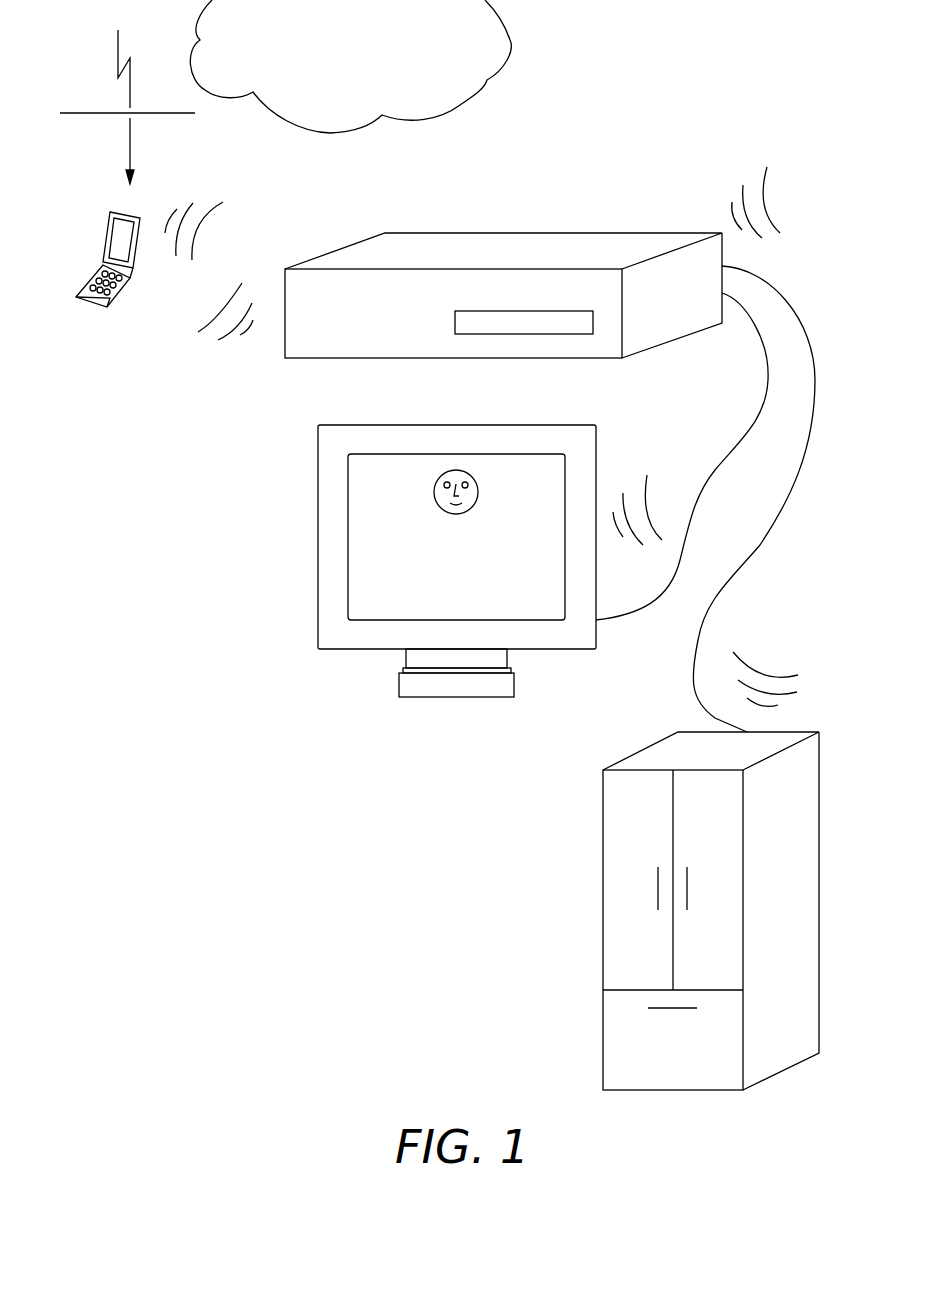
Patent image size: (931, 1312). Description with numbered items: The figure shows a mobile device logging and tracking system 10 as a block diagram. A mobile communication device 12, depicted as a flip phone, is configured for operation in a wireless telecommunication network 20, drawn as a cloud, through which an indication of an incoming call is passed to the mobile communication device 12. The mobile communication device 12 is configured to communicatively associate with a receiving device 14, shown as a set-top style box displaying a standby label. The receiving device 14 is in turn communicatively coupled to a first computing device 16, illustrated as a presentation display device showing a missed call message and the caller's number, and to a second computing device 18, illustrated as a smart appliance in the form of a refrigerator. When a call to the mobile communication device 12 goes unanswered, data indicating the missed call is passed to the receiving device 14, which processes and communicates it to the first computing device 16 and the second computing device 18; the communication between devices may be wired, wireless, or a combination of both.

The mobile device logging and tracking system 10 is at (180, 546).
The mobile communication device 12 is at (105, 242).
The receiving device 14 is at (553, 233).
The first computing device 16 is at (455, 424).
The second computing device 18 is at (602, 930).
The wireless telecommunication network 20 is at (335, 108).